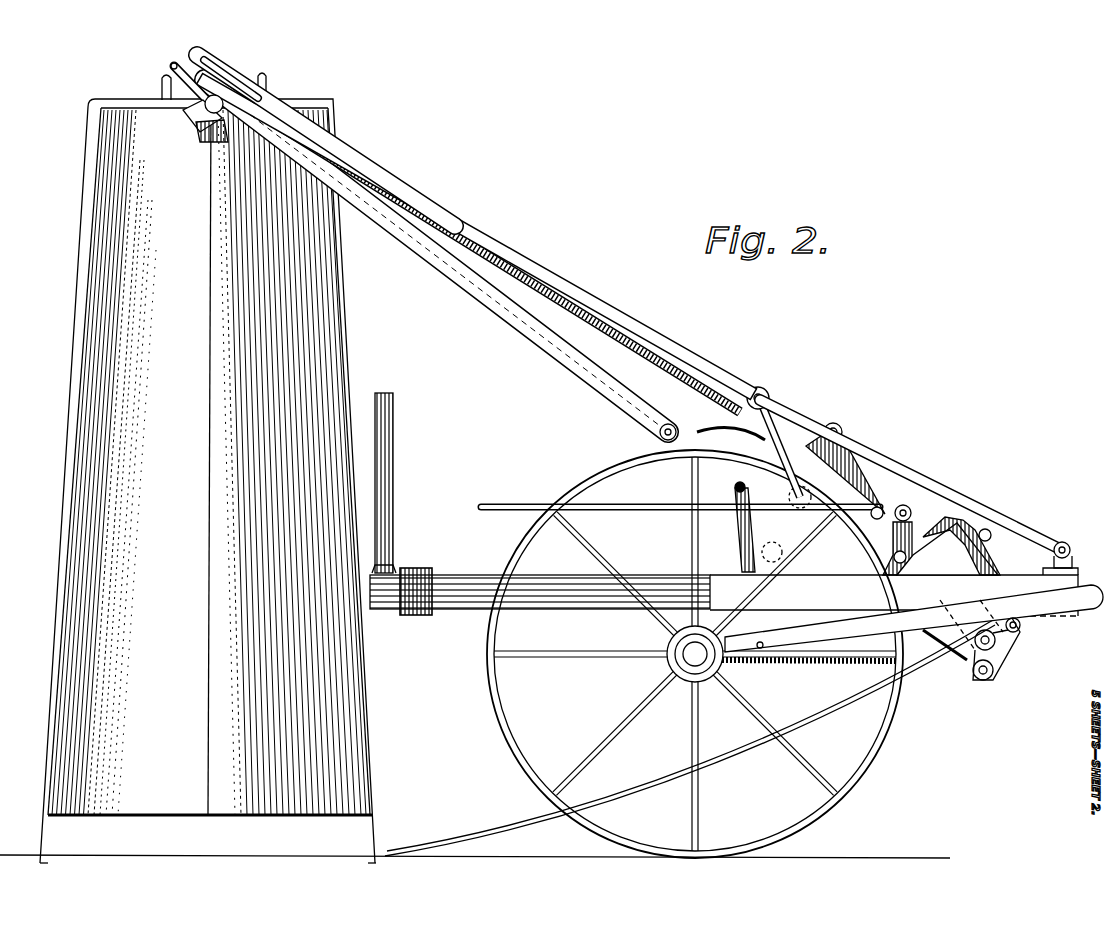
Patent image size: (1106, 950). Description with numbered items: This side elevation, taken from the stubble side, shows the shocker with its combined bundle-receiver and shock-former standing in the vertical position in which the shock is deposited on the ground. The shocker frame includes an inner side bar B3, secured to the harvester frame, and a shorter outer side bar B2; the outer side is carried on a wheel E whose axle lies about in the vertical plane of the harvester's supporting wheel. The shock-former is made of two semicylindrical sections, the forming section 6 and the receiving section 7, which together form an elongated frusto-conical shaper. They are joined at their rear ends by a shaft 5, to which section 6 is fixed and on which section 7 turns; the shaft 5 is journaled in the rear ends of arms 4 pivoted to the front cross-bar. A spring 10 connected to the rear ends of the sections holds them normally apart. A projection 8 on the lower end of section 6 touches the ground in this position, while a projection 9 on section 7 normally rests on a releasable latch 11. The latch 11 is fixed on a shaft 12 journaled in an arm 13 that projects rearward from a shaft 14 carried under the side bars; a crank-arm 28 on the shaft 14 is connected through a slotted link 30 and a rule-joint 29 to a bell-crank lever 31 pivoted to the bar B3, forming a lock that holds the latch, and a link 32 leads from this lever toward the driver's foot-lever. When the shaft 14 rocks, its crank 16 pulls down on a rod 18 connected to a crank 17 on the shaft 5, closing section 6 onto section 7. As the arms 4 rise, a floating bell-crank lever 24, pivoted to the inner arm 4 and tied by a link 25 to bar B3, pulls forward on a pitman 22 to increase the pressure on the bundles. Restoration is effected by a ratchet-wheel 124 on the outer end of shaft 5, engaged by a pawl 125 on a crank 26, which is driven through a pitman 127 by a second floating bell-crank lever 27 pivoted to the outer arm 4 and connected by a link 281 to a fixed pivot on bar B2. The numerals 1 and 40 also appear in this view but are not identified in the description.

The frame bar 1 is at (833, 645).
The arms 4 is at (580, 305).
The shaft 5 is at (192, 122).
The forming section 6 is at (340, 365).
The receiving section 7 is at (78, 460).
The projection 8 is at (380, 852).
The projection 9 is at (42, 850).
The spring 10 is at (266, 84).
The latch 11 is at (972, 675).
The shaft 12 is at (996, 645).
The arm 13 is at (960, 636).
The shaft 14 is at (1022, 628).
The crank 16 is at (994, 672).
The crank 17 is at (236, 86).
The rod 18 is at (348, 172).
The pitman 22 is at (672, 372).
The floating bell-crank lever 24 is at (862, 470).
The link 25 is at (738, 548).
The crank 26 is at (162, 85).
The second floating bell-crank lever 27 is at (775, 412).
The crank-arm 28 is at (1000, 582).
The rule-joint connection 29 is at (950, 535).
The slotted link 30 is at (982, 552).
The bell-crank lever 31 is at (935, 528).
The link 32 is at (510, 506).
The runner 40 is at (500, 847).
The ratchet-wheel 124 is at (205, 142).
The pawl 125 is at (170, 62).
The pitman 127 is at (300, 112).
The link 281 is at (778, 556).
The outer side bar B2 is at (894, 595).
The inner side bar B3 is at (468, 608).
The wheel E is at (882, 742).